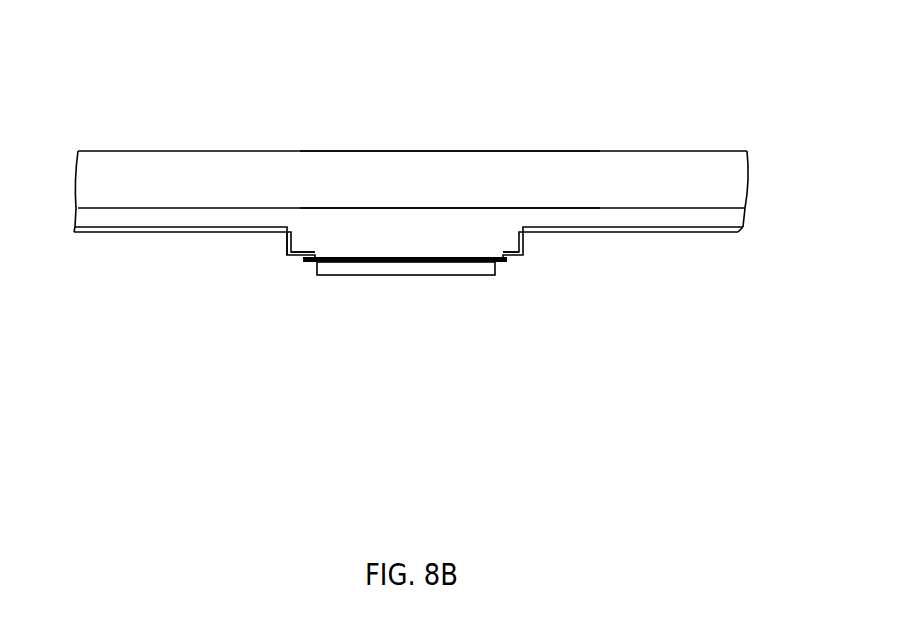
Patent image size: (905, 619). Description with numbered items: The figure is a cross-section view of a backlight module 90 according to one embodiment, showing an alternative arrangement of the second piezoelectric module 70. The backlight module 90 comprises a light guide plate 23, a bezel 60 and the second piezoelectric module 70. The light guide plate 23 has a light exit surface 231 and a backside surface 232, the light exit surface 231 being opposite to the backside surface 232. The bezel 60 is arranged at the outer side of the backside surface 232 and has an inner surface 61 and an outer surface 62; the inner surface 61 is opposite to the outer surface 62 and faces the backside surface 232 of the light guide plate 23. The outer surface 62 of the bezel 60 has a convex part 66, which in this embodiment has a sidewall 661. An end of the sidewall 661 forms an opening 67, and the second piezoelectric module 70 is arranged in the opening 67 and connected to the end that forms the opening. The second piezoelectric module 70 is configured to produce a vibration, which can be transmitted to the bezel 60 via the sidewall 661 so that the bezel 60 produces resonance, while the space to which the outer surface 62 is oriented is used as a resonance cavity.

The backlight module 90 is at (58, 78).
The light guide plate 23 is at (680, 193).
The light exit surface 231 is at (622, 150).
The backside surface 232 is at (634, 210).
The bezel 60 is at (431, 259).
The inner surface 61 is at (747, 215).
The outer surface 62 is at (729, 233).
The convex part 66 is at (371, 278).
The sidewall 661 is at (287, 244).
The opening 67 is at (404, 253).
The second piezoelectric module 70 is at (362, 270).